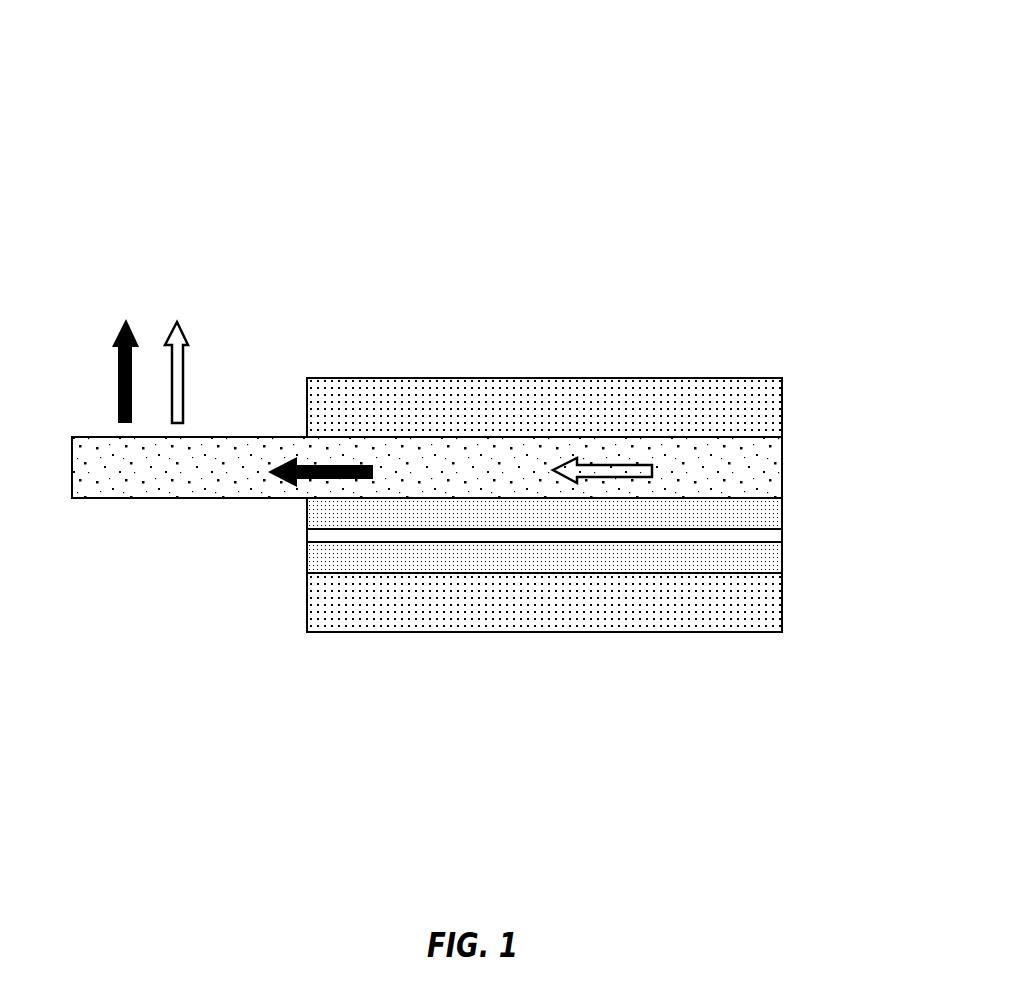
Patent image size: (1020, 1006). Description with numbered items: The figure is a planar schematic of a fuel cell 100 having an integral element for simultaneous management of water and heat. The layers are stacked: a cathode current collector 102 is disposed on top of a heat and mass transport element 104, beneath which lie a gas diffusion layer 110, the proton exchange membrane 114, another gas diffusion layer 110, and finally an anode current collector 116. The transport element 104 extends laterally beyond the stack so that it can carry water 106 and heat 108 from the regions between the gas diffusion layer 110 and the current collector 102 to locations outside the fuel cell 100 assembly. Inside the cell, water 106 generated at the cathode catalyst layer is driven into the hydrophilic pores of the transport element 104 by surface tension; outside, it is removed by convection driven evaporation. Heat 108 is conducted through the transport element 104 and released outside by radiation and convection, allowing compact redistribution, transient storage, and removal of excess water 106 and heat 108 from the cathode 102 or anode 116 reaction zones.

The fuel cell 100 is at (282, 127).
The cathode current collector 102 is at (782, 392).
The heat and mass transport element 104 is at (782, 458).
The water 106 is at (118, 372).
The heat 108 is at (183, 372).
The gas diffusion layer 110 is at (782, 500).
The proton exchange membrane 114 is at (782, 531).
The anode current collector 116 is at (782, 612).